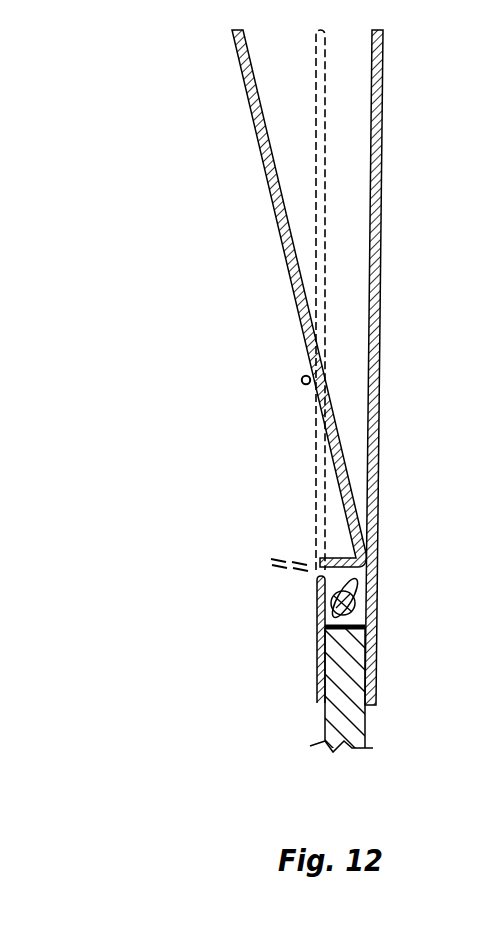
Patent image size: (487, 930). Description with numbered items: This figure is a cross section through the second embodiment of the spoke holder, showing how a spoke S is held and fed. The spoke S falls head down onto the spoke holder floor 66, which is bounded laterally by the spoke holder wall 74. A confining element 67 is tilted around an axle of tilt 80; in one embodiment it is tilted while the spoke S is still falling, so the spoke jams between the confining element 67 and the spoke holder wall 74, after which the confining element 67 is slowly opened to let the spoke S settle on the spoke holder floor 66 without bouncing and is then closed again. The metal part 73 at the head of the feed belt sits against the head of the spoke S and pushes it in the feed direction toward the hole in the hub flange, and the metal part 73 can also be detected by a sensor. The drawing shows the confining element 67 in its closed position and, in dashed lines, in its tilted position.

The pivoting arm 67 is at (300, 311).
The pivot pin 80 is at (301, 380).
The upright support member 74 is at (380, 390).
The channel bracket 73 is at (315, 597).
The spring s is at (372, 607).
The post 66 is at (364, 731).